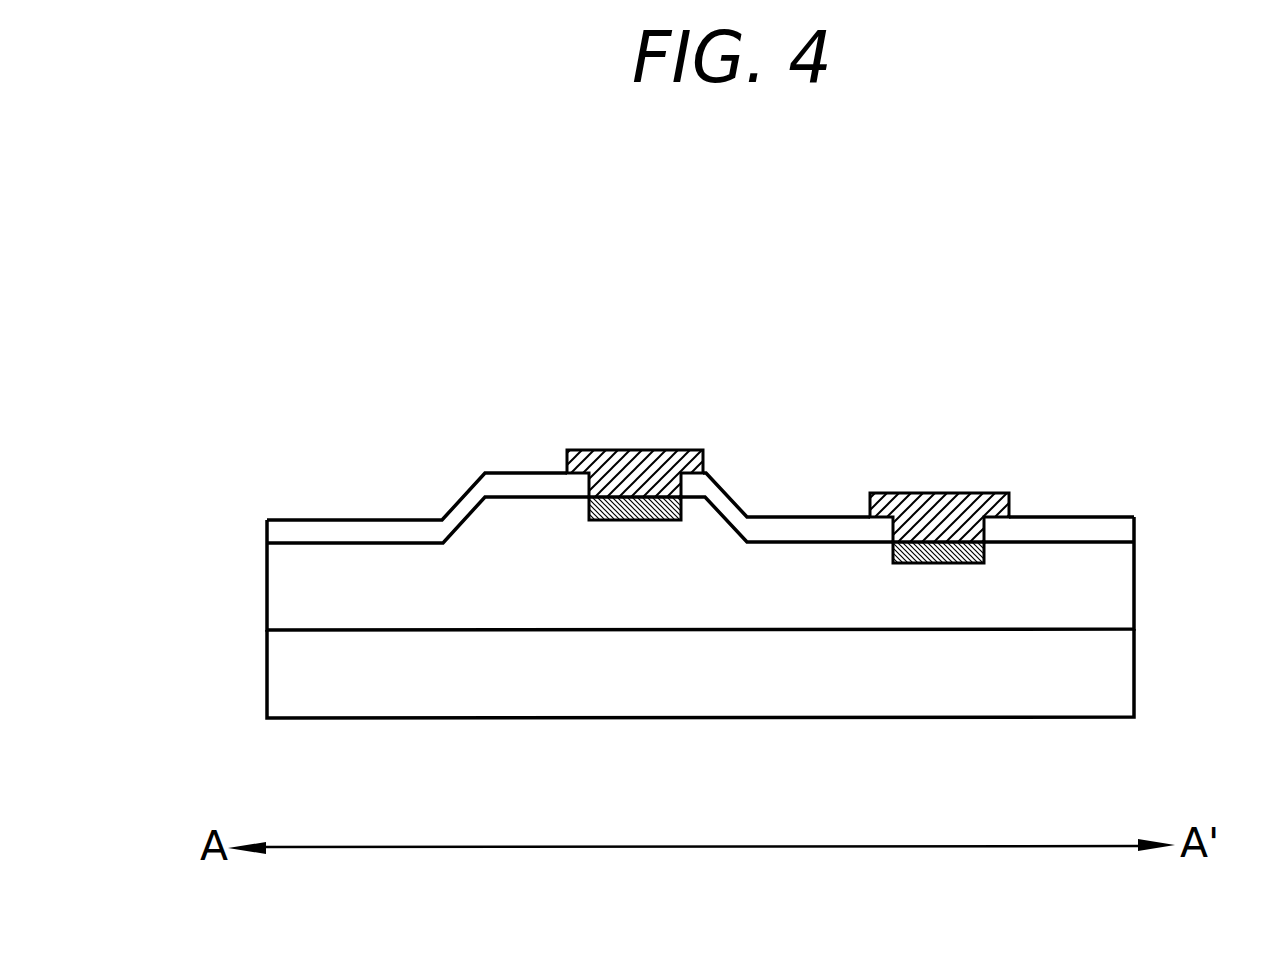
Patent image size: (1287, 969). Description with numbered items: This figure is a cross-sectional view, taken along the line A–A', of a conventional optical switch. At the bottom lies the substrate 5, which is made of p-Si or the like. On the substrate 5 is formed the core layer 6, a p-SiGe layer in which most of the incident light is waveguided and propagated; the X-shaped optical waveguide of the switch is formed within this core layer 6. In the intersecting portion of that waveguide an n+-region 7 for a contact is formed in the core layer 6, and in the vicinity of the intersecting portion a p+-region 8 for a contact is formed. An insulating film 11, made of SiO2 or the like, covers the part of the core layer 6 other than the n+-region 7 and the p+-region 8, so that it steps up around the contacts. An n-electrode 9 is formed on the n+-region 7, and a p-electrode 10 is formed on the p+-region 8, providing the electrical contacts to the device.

The substrate 5 is at (1136, 675).
The core layer 6 is at (1136, 582).
The n+-region 7 is at (631, 505).
The p+-region 8 is at (930, 563).
The n-electrode 9 is at (637, 450).
The p-electrode 10 is at (947, 493).
The insulating film 11 is at (360, 533).